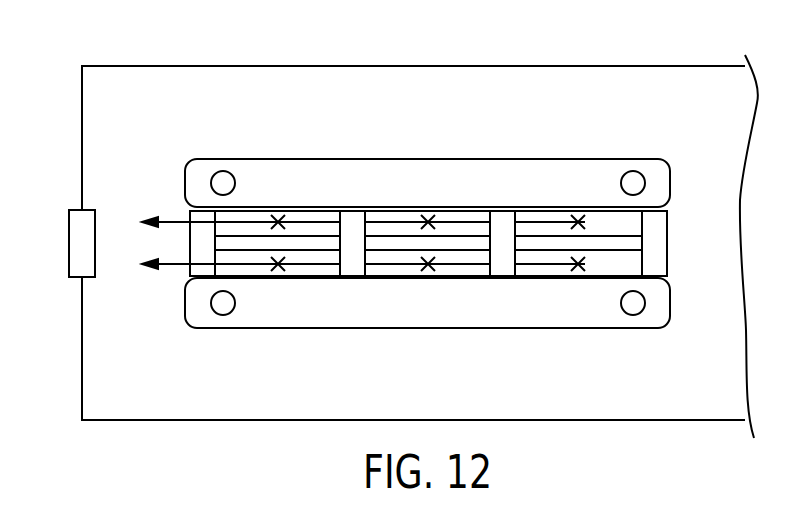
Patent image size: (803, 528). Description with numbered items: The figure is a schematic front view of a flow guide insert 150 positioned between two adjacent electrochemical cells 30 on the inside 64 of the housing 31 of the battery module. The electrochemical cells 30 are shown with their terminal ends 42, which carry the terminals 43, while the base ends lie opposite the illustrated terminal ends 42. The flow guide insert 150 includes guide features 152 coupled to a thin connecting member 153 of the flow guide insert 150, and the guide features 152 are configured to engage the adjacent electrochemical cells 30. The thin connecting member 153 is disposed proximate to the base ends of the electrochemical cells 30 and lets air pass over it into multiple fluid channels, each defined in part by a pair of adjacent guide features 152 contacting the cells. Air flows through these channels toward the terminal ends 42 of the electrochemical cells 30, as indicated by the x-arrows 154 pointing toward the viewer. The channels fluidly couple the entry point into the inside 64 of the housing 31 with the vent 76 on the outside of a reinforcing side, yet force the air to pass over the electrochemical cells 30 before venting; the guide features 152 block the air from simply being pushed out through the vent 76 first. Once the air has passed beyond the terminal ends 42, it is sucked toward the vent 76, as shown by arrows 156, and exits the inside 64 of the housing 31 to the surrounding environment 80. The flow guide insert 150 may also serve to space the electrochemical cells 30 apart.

The housing 31 is at (453, 66).
The inside of the housing 64 is at (228, 112).
The surrounding environment 80 is at (37, 281).
The vent 76 is at (78, 238).
The electrochemical cell 30 is at (378, 158).
The terminal end 42 is at (470, 168).
The terminal 43 is at (222, 184).
The flow guide insert 150 is at (677, 247).
The guide feature 152 is at (203, 249).
The thin connecting member 153 is at (392, 243).
The x-arrows 154 is at (278, 220).
The arrows 156 is at (165, 262).